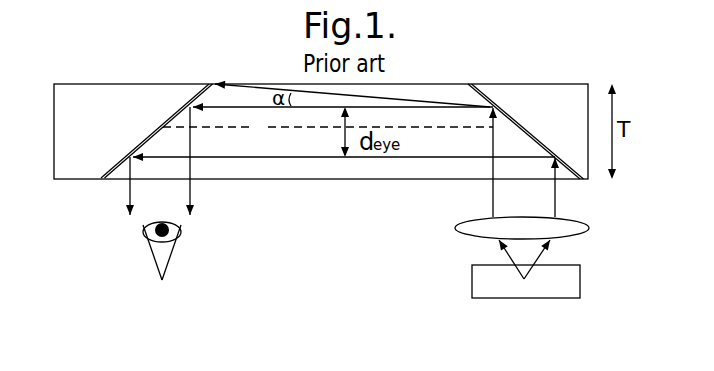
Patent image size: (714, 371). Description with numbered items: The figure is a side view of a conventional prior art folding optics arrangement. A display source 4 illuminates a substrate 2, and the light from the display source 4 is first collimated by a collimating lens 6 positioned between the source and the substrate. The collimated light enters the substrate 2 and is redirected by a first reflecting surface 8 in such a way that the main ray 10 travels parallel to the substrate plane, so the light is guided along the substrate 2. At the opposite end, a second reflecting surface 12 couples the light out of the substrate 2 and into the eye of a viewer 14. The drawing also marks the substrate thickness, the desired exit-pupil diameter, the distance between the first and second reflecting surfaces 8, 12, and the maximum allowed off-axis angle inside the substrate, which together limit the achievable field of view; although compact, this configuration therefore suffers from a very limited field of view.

The substrate 2 is at (514, 101).
The display source 4 is at (552, 287).
The collimating lens 6 is at (577, 237).
The first reflecting surface 8 is at (537, 138).
The main ray 10 is at (440, 109).
The second reflecting surface 12 is at (145, 142).
The eye of a viewer 14 is at (178, 248).